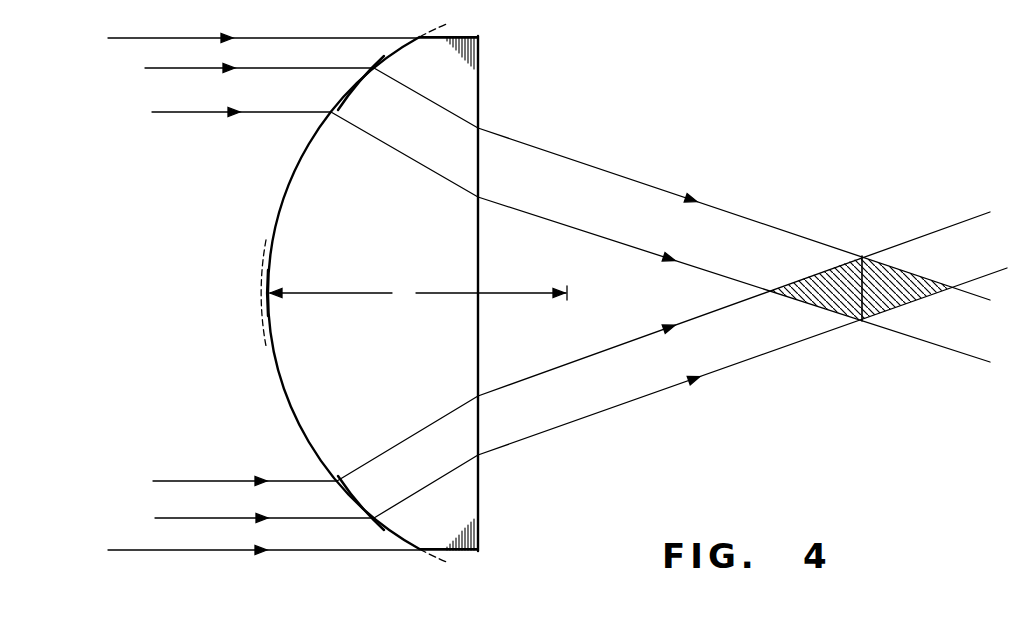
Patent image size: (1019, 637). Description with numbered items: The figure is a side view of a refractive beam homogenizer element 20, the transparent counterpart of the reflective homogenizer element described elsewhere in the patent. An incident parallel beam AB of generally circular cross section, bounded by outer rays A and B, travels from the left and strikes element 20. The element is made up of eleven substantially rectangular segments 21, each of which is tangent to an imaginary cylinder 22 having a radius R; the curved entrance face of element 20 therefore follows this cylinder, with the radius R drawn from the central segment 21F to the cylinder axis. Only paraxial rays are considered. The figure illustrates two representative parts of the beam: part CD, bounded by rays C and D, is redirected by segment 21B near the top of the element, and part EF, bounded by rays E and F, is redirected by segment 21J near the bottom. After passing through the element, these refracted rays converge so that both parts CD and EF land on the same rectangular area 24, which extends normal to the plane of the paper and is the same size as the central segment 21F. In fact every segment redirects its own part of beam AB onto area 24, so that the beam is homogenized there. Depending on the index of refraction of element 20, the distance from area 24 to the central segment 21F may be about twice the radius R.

The refractive beam homogenizer element 20 is at (379, 231).
The substantially rectangular segments 21 is at (266, 342).
The segment 21B is at (348, 93).
The central segment 21F is at (268, 282).
The segment 21J is at (342, 487).
The imaginary cylinder 22 is at (444, 557).
The rectangular area 24 is at (868, 290).
The radius of imaginary cylinder R is at (418, 293).
The boundary ray of beam AB A is at (285, 39).
The boundary ray of beam AB B is at (283, 551).
The ray of beam part CD C is at (558, 180).
The ray of beam part CD D is at (561, 232).
The ray of beam part EF E is at (561, 352).
The ray of beam part EF F is at (573, 398).